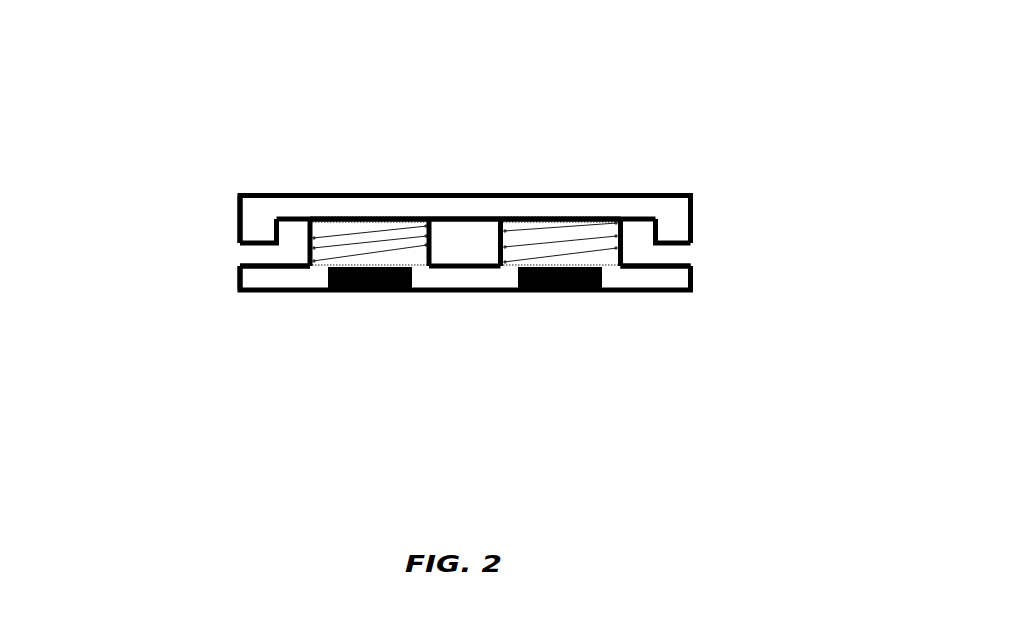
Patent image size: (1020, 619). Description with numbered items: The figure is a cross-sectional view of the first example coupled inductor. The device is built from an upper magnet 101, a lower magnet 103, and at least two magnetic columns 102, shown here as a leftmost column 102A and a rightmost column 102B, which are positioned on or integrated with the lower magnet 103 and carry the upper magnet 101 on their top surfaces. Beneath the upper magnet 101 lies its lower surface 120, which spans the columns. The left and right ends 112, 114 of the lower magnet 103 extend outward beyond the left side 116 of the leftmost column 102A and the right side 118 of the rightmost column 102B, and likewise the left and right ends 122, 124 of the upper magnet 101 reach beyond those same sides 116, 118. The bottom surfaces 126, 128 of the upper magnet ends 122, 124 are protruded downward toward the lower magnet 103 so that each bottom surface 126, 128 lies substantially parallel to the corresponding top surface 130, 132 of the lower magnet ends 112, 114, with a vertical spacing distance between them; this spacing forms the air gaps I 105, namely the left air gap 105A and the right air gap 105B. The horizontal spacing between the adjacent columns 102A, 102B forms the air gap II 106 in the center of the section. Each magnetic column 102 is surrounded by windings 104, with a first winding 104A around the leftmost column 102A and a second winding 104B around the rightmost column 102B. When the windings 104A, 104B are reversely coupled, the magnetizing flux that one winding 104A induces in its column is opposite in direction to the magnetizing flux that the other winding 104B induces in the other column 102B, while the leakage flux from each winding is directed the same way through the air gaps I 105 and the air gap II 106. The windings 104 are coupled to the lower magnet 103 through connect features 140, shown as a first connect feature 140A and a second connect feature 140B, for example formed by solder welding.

The upper magnet 101 is at (480, 207).
The lower magnet 103 is at (457, 275).
The air gap II 106 is at (468, 247).
The air gaps I 105 is at (449, 182).
The left air gap I 105A is at (259, 243).
The right air gap I 105B is at (793, 168).
The left side of the leftmost column 116 is at (307, 248).
The right side of the rightmost column 118 is at (623, 245).
The lower surface of cover plate 120 is at (345, 218).
The left end of the upper magnet 122 is at (240, 211).
The right end of the upper magnet 124 is at (693, 223).
The bottom surface of the left end of the upper magnet 126 is at (263, 257).
The bottom surface of the right end of the upper magnet 128 is at (683, 243).
The top surface of the left end of the lower magnet 130 is at (248, 263).
The top surface of the right end of the lower magnet 132 is at (667, 263).
The left end of the lower magnet 112 is at (238, 280).
The right end of the lower magnet 114 is at (692, 283).
The magnetic columns 102 is at (466, 317).
The leftmost magnetic column 102A is at (375, 245).
The rightmost magnetic column 102B is at (568, 245).
The windings 104 is at (446, 335).
The first winding 104A is at (345, 243).
The second winding 104B is at (562, 253).
The connect features 140 is at (457, 378).
The first connect feature 140A is at (370, 275).
The second connect feature 140B is at (563, 280).